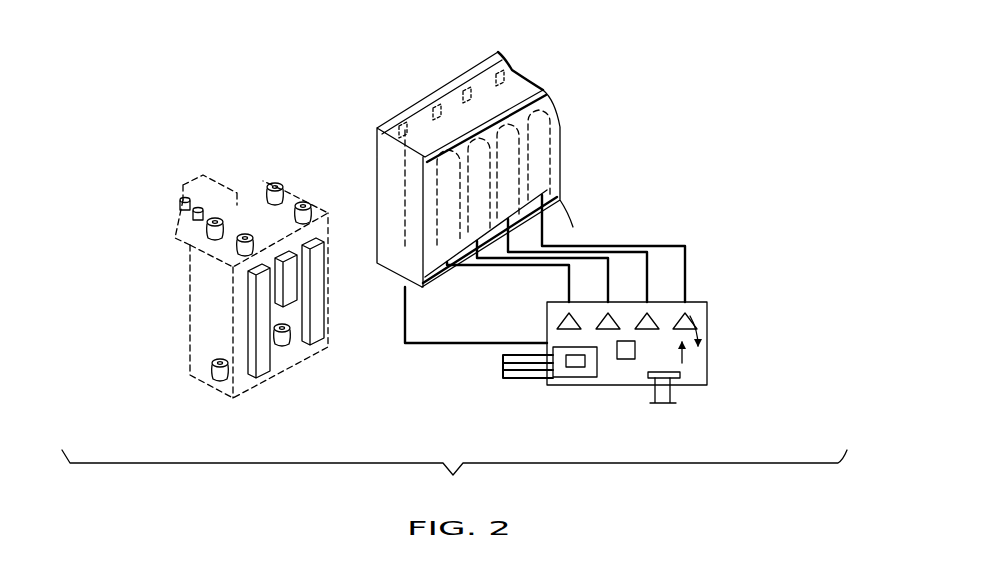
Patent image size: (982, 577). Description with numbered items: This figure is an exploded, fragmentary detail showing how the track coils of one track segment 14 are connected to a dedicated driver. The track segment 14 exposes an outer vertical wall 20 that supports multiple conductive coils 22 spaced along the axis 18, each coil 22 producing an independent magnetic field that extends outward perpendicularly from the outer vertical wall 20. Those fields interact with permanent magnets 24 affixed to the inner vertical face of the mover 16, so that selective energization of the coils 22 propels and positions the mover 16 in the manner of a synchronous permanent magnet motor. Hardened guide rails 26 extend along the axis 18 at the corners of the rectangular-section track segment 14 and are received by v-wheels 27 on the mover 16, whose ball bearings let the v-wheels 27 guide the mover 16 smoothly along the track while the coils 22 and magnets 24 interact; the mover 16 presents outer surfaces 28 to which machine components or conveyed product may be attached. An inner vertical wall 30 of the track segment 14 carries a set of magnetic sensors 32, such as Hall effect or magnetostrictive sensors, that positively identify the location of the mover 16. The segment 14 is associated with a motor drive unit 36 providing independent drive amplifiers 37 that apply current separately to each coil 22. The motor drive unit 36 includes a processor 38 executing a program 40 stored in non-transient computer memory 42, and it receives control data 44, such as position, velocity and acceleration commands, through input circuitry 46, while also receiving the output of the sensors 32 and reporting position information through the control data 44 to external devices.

The track segment 14 is at (531, 198).
The mover 16 is at (202, 279).
The axis 18 is at (528, 74).
The outer vertical wall 20 is at (531, 206).
The conductive coils 22 is at (560, 165).
The permanent magnets 24 is at (290, 280).
The hardened guide rails 26 is at (498, 54).
The v-wheels 27 is at (280, 187).
The outer surfaces 28 is at (200, 253).
The inner vertical wall 30 is at (460, 168).
The magnetic sensors 32 is at (418, 108).
The motor drive units 36 is at (632, 352).
The drive amplifiers 37 is at (650, 310).
The processor 38 is at (623, 362).
The program 40 is at (551, 390).
The non-transient computer memory 42 is at (578, 370).
The control data 44 is at (697, 407).
The input circuitry 46 is at (681, 375).